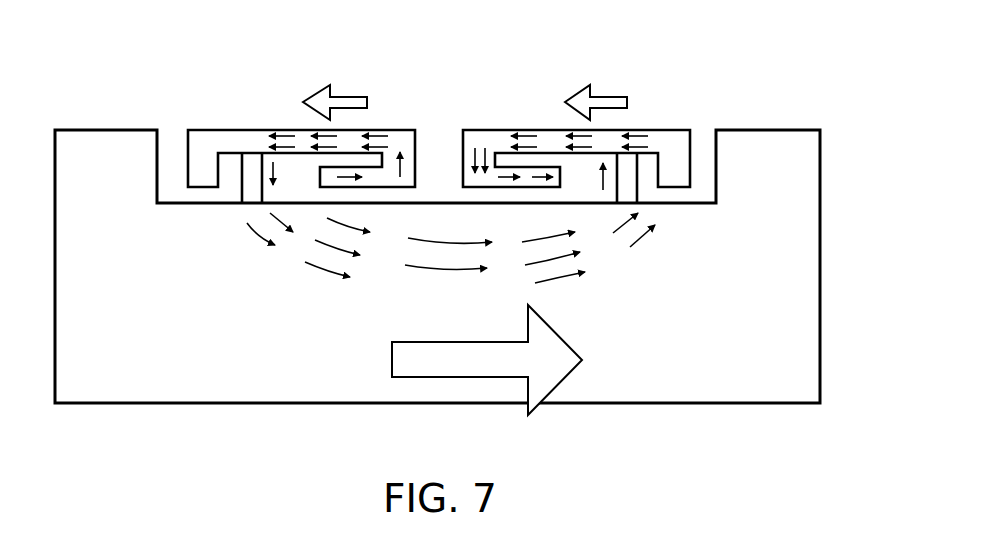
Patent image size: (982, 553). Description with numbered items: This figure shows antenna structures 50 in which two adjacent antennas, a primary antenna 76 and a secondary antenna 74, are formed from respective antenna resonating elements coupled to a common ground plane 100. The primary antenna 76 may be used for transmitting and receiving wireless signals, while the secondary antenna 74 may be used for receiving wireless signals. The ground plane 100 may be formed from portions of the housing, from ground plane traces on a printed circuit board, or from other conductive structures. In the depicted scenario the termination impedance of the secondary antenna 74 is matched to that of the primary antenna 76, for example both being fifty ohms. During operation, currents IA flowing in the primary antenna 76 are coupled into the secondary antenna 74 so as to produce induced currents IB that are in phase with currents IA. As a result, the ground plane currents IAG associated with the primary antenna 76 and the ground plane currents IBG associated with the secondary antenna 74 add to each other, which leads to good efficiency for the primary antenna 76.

The antenna structures 50 is at (708, 63).
The secondary antenna 74 is at (408, 129).
The primary antenna 76 is at (677, 129).
The common ground plane 100 is at (807, 238).
The induced currents IB is at (285, 135).
The currents IA is at (640, 135).
The ground plane currents IBG is at (318, 270).
The ground plane currents IAG is at (558, 280).